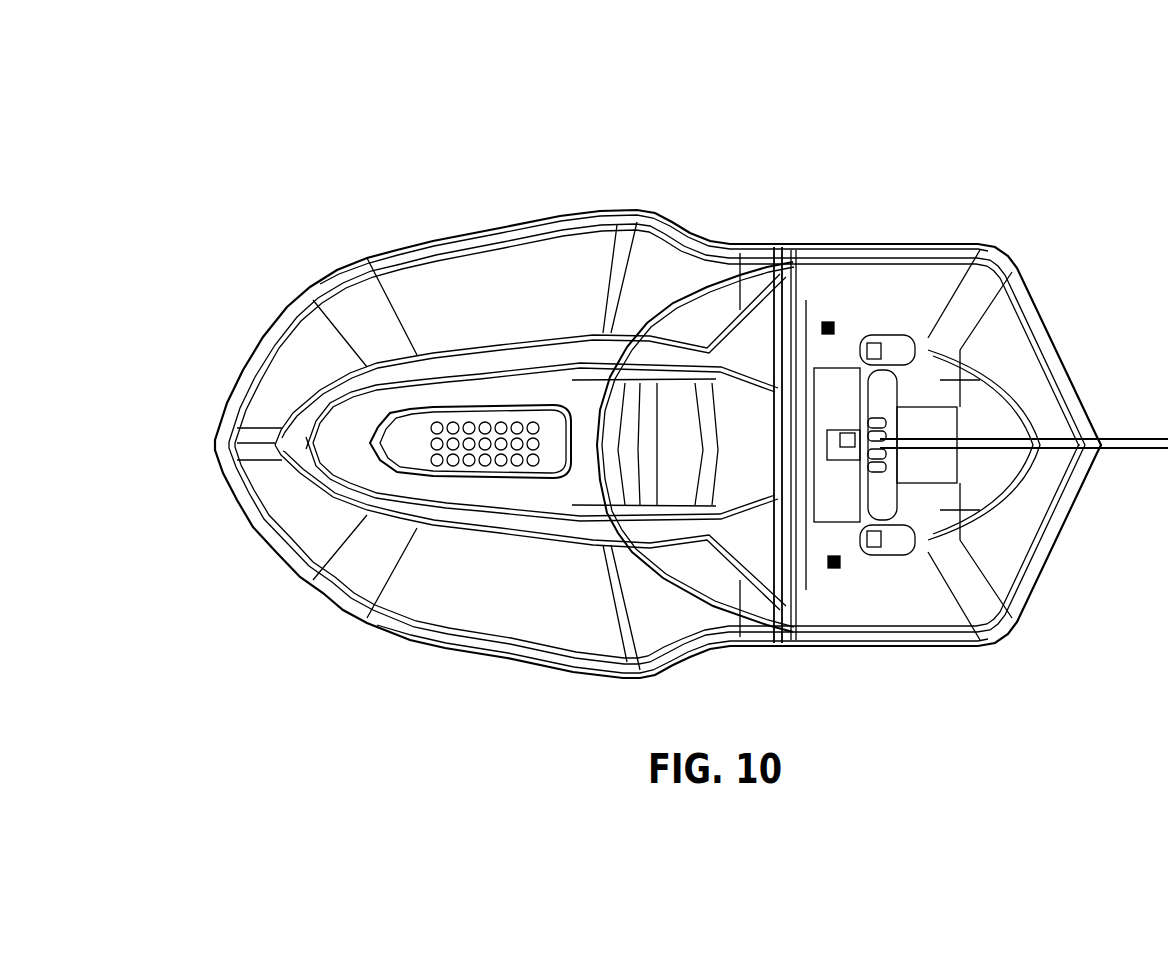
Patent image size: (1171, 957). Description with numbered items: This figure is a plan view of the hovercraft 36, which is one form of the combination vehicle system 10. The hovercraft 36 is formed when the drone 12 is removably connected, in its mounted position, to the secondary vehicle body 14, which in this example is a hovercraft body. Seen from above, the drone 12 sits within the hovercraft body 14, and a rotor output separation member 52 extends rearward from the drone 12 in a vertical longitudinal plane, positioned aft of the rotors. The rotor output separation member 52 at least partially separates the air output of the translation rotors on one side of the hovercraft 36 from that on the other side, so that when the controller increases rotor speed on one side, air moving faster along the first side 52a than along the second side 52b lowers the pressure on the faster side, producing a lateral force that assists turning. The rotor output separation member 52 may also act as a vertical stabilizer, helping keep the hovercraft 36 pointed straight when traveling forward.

The combination vehicle system 10 is at (417, 168).
The hovercraft 36 is at (657, 368).
The secondary vehicle body 14 is at (601, 210).
The drone 12 is at (837, 330).
The rotor output separation member 52 is at (1130, 437).
The first side 52a is at (1103, 437).
The second side 52b is at (1060, 450).